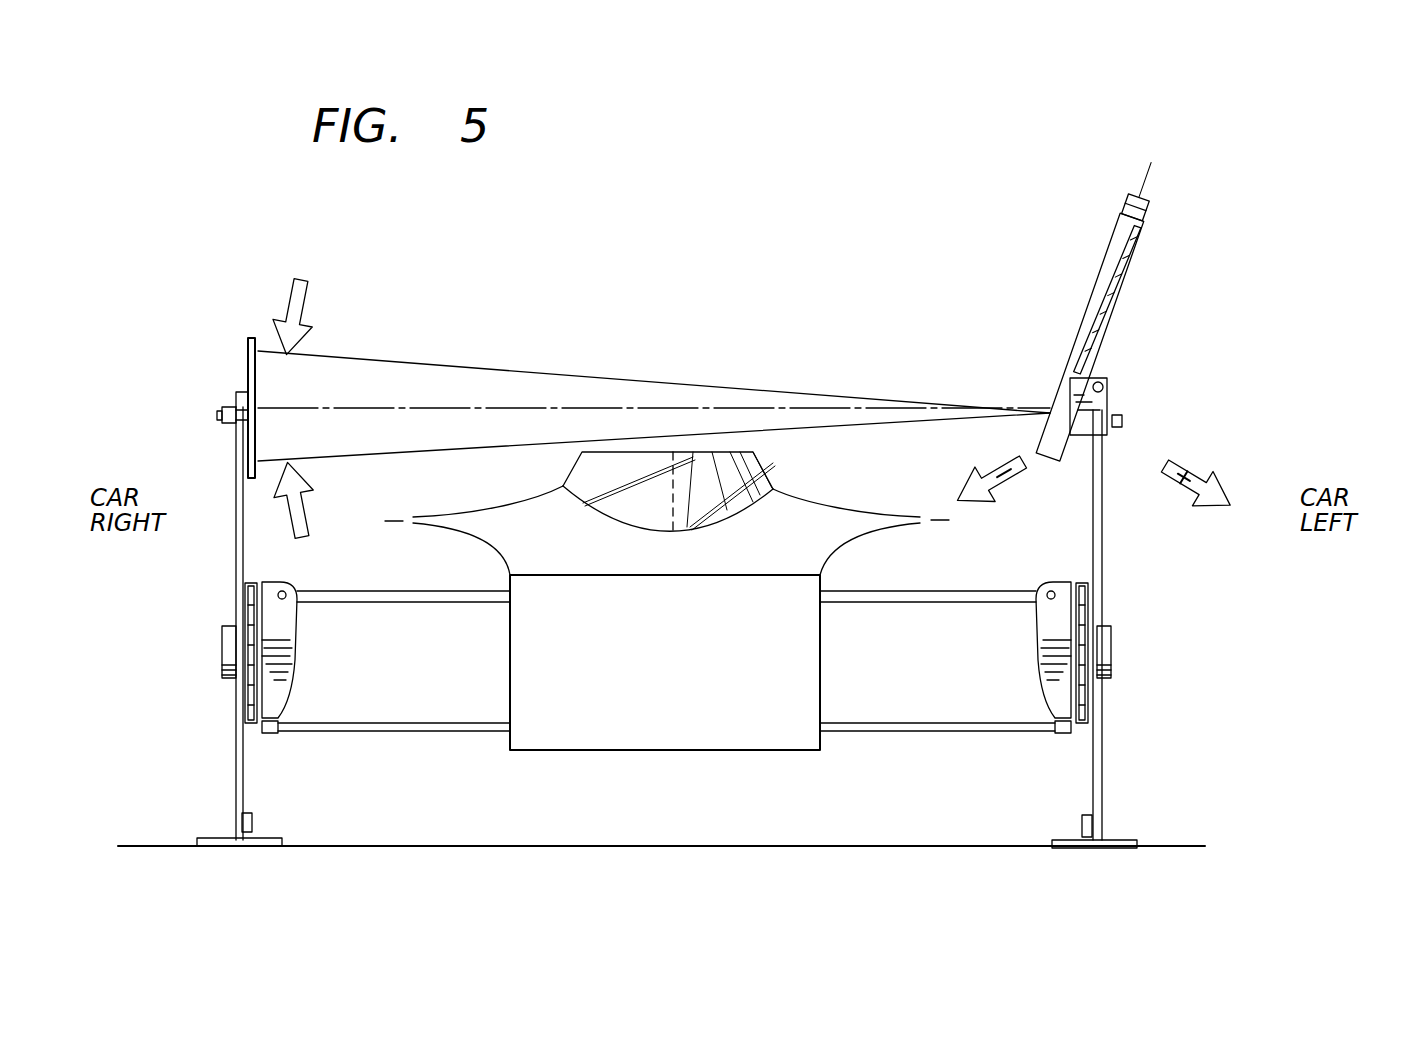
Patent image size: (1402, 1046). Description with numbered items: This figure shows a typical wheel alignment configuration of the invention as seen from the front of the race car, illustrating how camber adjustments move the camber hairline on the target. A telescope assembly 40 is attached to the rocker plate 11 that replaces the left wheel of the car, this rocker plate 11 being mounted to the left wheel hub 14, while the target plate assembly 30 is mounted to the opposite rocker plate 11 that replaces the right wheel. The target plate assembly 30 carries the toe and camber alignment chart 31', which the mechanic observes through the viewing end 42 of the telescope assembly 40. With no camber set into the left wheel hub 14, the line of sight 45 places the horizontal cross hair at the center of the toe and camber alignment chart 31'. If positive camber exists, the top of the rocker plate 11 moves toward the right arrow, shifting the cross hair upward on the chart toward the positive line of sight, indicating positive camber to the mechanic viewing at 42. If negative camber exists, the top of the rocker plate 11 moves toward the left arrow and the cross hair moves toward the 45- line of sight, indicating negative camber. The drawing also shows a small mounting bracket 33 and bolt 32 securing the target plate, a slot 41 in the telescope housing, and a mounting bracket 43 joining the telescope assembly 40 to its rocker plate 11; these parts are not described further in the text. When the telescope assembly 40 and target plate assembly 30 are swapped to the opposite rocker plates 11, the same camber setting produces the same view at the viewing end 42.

The rocker plate 11 is at (233, 562).
The left wheel hub 14 is at (243, 685).
The target plate assembly 30 is at (247, 347).
The toe and camber alignment chart 31' is at (325, 408).
The bolt 32 is at (217, 416).
The mounting bracket 33 is at (236, 392).
The telescope assembly 40 is at (1102, 258).
The slot 41 is at (1113, 322).
The viewing end 42 is at (1153, 217).
The laser mounting bracket 43 is at (1030, 448).
The line of sight 45 is at (710, 410).
The negative camber line of sight 45- is at (567, 443).